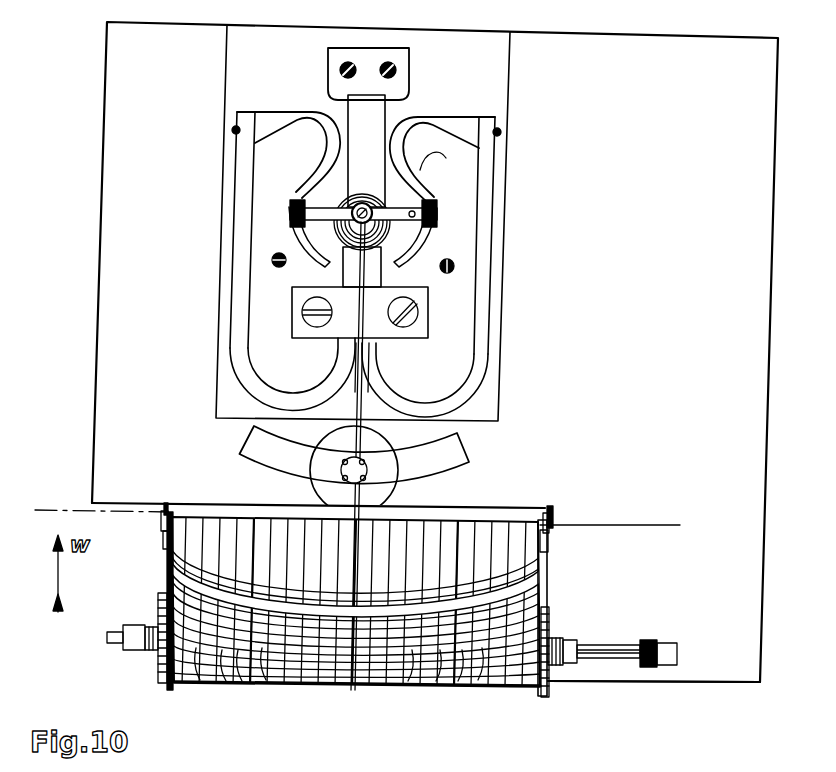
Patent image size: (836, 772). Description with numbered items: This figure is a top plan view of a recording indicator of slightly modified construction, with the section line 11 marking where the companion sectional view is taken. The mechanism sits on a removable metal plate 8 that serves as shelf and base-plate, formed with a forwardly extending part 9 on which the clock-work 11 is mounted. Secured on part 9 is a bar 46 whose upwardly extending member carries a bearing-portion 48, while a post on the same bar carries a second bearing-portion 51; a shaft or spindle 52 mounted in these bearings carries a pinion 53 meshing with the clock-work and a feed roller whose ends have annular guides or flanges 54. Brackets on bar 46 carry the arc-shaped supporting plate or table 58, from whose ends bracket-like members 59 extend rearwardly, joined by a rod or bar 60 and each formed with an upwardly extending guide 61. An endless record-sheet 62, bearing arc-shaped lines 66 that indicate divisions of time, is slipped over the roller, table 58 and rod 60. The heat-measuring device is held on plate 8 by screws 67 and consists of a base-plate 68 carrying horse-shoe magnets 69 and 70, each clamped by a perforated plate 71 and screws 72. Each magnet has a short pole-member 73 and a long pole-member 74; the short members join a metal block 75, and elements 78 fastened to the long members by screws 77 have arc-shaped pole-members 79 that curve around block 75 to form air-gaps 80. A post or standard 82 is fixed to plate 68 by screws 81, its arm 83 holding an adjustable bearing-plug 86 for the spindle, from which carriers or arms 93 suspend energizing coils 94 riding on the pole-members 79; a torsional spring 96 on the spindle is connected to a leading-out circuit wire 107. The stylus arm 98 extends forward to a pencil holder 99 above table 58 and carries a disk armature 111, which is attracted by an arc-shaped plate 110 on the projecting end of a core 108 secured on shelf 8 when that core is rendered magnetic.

The metal plate 8 is at (752, 258).
The forwardly extending part 9 is at (722, 676).
The clock-work 11 is at (373, 505).
The bar 46 is at (618, 662).
The bearing-portion 48 is at (129, 632).
The bearing-portion 51 is at (578, 647).
The shaft or spindle 52 is at (130, 642).
The pinion 53 is at (658, 641).
The annular guides or flanges 54 is at (153, 668).
The supporting plate or table 58 is at (163, 548).
The bracket-like members 59 is at (162, 528).
The rod or bar 60 is at (178, 515).
The upwardly extending guide 61 is at (166, 512).
The record-sheet 62 is at (303, 688).
The arc-shaped lines 66 is at (198, 686).
The screws 67 is at (272, 260).
The base-plate 68 is at (494, 70).
The horse-shoe magnet 69 is at (296, 405).
The horse-shoe magnet 70 is at (426, 406).
The perforated plate 71 is at (303, 303).
The screws 72 is at (312, 319).
The short arm or pole-member 73 is at (343, 280).
The long arm or pole-member 74 is at (237, 181).
The metal block 75 is at (322, 180).
The screws 77 is at (232, 129).
The elements 78 is at (272, 117).
The arc-shaped pole-member 79 is at (293, 236).
The air-gaps 80 is at (288, 202).
The screws 81 is at (387, 62).
The post or standard 82 is at (386, 92).
The arm 83 is at (378, 130).
The screw-threaded bearing-plug 86 is at (363, 203).
The carriers or arms 93 is at (432, 211).
The energizing coils 94 is at (388, 228).
The torsional spring 96 is at (420, 236).
The arm 98 is at (364, 365).
The holder 99 is at (350, 690).
The leading-out circuit wire 107 is at (425, 149).
The core 108 is at (340, 486).
The arc-shaped plate 110 is at (460, 452).
The armature 111 is at (370, 468).